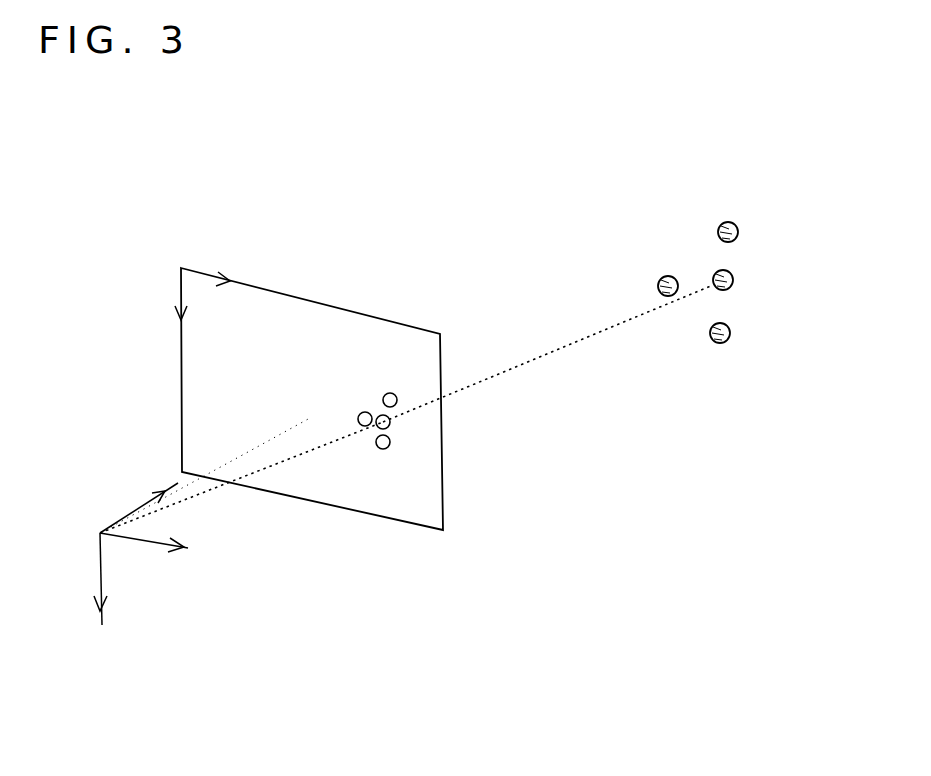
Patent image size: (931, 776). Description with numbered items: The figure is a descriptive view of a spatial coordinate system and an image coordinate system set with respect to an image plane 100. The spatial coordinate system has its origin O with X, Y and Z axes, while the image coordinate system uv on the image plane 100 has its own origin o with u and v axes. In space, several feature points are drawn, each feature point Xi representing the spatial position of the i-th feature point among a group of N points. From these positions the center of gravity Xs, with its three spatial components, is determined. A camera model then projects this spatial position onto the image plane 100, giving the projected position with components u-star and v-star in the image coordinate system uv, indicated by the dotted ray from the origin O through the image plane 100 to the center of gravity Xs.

The image plane 100 is at (373, 503).
The spatial coordinate system origin O is at (140, 549).
The image coordinate system uv is at (400, 425).
The spatial position of i-th feature point Xi is at (718, 224).
The center of gravity Xs is at (736, 280).